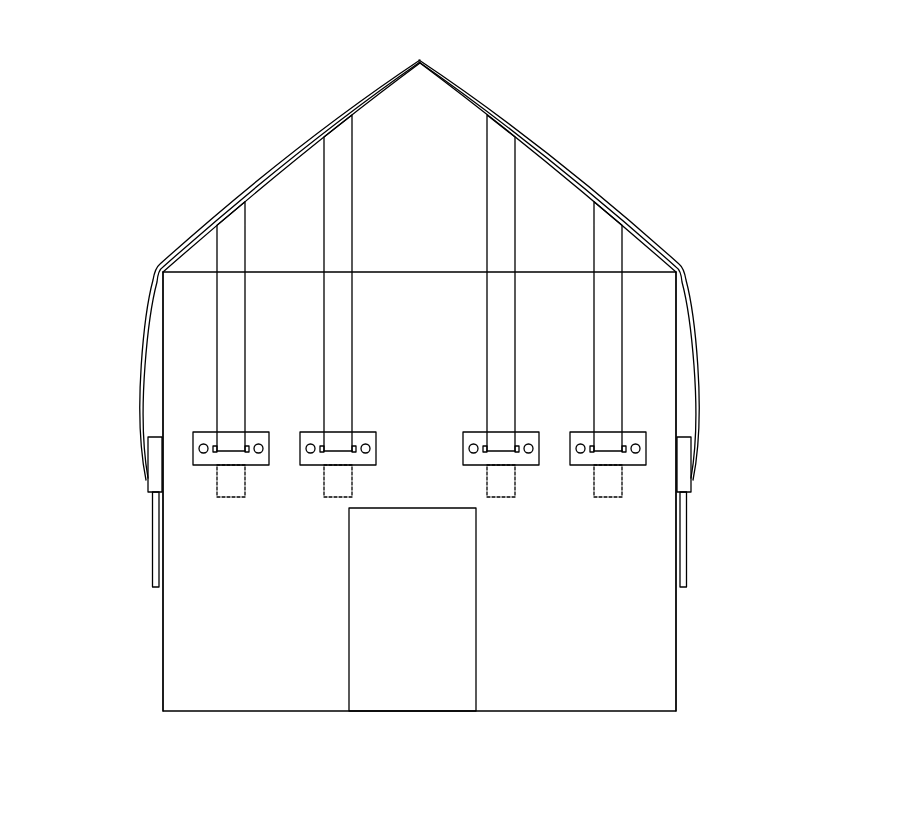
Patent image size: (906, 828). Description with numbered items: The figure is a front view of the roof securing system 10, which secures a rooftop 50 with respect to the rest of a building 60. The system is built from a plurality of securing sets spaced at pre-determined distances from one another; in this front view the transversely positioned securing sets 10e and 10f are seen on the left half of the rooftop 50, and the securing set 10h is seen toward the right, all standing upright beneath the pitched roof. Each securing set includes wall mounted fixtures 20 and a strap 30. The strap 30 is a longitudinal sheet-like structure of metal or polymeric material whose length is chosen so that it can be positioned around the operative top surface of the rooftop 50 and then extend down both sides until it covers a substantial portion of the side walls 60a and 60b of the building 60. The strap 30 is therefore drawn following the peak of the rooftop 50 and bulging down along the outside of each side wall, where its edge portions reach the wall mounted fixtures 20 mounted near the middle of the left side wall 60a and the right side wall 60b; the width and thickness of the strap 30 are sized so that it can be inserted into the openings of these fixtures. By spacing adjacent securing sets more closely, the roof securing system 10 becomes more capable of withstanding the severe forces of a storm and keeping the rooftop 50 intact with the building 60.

The roof securing system 10 is at (113, 36).
The securing set 10e is at (233, 258).
The securing set 10f is at (337, 162).
The securing set 10h is at (607, 259).
The wall mounted fixture 20 is at (146, 479).
The strap 30 is at (578, 168).
The rooftop 50 is at (283, 192).
The building 60 is at (690, 625).
The side wall 60a is at (162, 653).
The side wall 60b is at (678, 675).